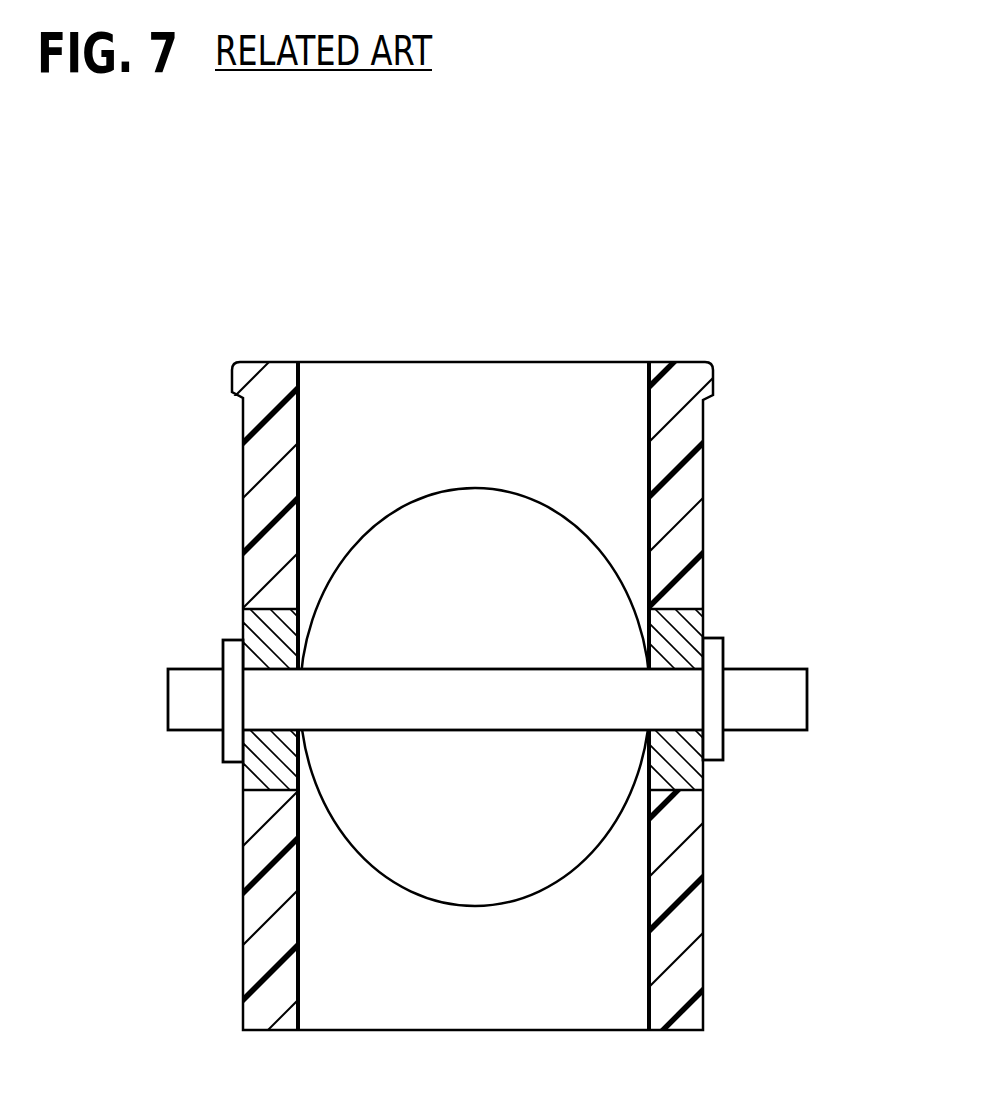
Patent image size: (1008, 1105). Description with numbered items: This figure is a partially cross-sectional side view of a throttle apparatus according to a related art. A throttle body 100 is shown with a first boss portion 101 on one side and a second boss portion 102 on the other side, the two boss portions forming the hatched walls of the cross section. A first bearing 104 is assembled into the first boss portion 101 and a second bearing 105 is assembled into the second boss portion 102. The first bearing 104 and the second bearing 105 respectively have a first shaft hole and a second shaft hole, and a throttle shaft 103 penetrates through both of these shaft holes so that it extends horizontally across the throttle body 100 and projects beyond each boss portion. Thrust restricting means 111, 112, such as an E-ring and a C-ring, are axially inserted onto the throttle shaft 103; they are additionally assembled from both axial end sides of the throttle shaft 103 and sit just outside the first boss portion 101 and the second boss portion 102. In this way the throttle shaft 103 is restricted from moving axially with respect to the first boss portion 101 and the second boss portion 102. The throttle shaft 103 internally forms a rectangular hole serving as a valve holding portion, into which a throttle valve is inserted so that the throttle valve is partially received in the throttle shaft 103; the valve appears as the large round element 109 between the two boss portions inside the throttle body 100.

The throttle body 100 is at (218, 371).
The first boss portion 101 is at (250, 595).
The second boss portion 102 is at (690, 582).
The throttle shaft 103 is at (785, 700).
The first bearing 104 is at (252, 770).
The second bearing 105 is at (678, 768).
The ball 109 is at (468, 512).
The thrust restricting means 111 is at (238, 647).
The thrust restricting means 112 is at (713, 660).